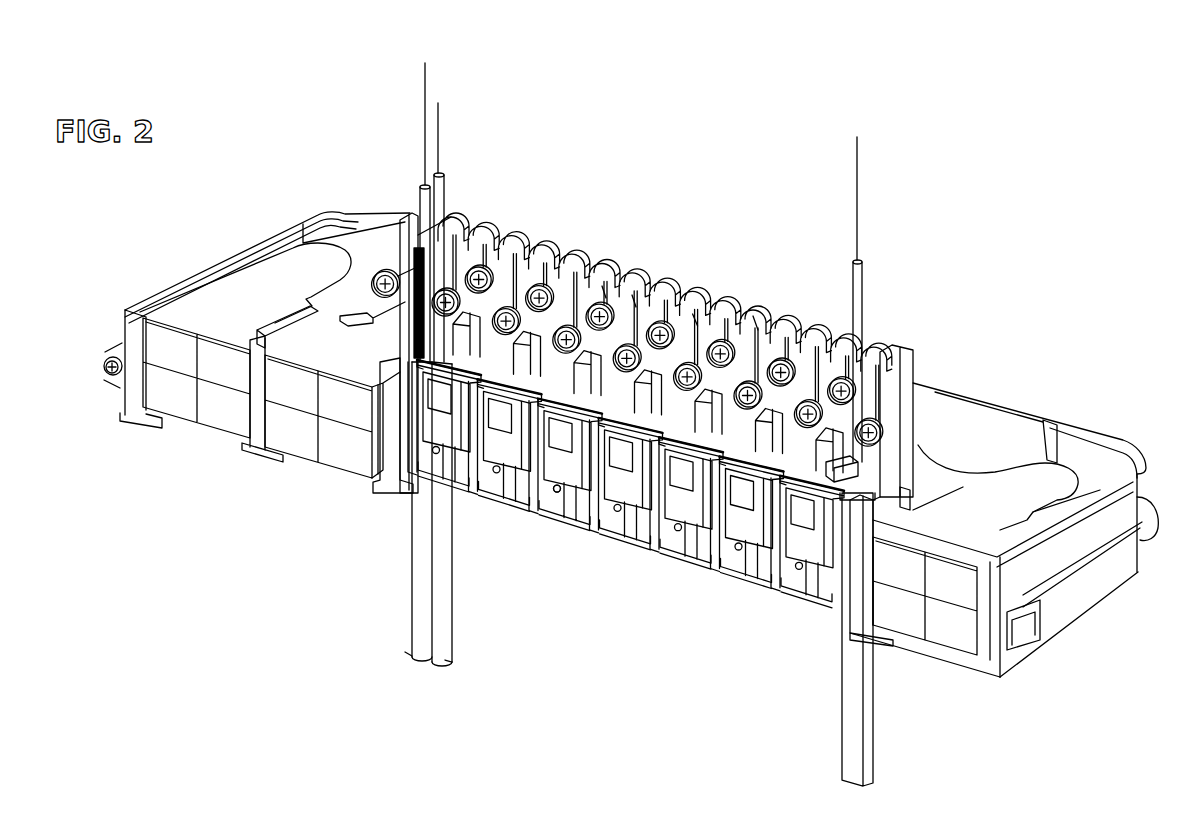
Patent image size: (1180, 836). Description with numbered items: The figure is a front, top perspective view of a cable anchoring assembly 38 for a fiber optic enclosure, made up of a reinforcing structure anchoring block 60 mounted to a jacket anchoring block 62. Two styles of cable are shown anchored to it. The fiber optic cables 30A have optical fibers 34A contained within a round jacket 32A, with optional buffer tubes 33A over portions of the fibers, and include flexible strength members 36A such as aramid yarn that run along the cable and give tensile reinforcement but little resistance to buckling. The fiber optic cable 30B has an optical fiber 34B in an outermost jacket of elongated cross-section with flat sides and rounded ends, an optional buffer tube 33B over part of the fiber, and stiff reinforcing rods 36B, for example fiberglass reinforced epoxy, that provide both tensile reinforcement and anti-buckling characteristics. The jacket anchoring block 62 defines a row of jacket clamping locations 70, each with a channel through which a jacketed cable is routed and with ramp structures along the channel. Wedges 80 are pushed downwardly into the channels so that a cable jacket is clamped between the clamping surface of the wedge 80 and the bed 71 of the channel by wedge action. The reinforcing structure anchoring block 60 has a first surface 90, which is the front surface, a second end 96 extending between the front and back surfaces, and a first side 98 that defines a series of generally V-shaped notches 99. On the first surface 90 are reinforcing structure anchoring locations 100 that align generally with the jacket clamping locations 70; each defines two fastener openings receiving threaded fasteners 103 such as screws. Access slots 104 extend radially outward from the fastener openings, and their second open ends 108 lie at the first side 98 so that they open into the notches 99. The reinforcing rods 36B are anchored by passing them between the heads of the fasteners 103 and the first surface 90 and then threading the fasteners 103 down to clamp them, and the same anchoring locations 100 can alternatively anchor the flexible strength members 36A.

The fiber optic cables 30A is at (398, 608).
The fiber optic cable 30B is at (826, 689).
The round jacket 32A is at (412, 650).
The buffer tubes 33A is at (443, 188).
The buffer tube 33B is at (862, 290).
The optical fibers 34A is at (438, 122).
The optical fiber 34B is at (857, 177).
The flexible strength members 36A is at (403, 333).
The reinforcing rods 36B is at (865, 382).
The cable anchoring assembly 38 is at (985, 243).
The reinforcing structure anchoring block 60 is at (938, 394).
The jacket anchoring block 62 is at (372, 503).
The jacket clamping locations 70 is at (606, 530).
The beds 71 is at (549, 493).
The wedges 80 is at (862, 463).
The first surface 90 is at (704, 318).
The second end 96 is at (910, 417).
The first side 98 is at (748, 310).
The notches 99 is at (579, 265).
The reinforcing structure anchoring locations 100 is at (500, 288).
The fasteners 103 is at (382, 270).
The access slots 104 is at (650, 286).
The second open ends 108 is at (610, 280).